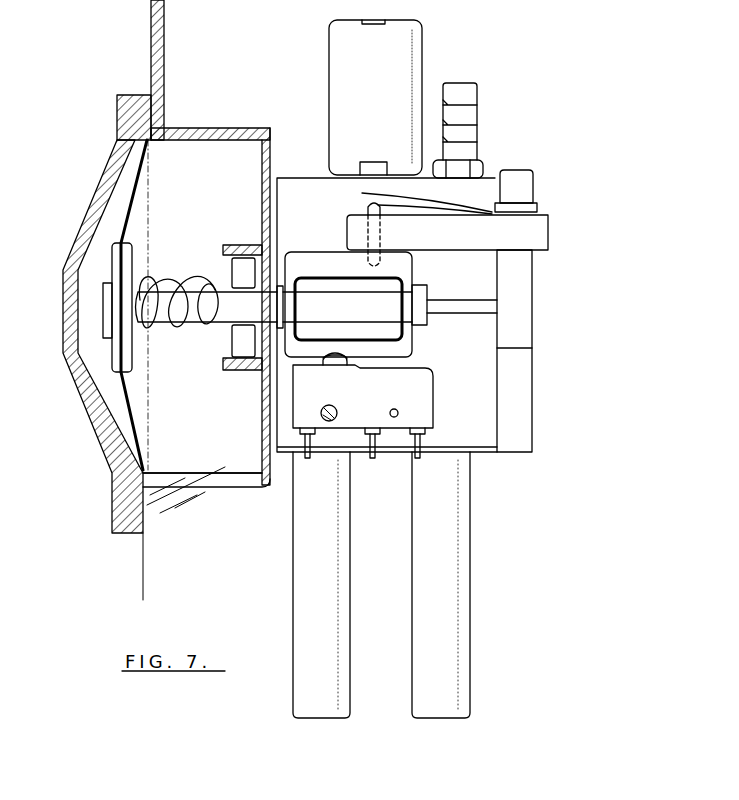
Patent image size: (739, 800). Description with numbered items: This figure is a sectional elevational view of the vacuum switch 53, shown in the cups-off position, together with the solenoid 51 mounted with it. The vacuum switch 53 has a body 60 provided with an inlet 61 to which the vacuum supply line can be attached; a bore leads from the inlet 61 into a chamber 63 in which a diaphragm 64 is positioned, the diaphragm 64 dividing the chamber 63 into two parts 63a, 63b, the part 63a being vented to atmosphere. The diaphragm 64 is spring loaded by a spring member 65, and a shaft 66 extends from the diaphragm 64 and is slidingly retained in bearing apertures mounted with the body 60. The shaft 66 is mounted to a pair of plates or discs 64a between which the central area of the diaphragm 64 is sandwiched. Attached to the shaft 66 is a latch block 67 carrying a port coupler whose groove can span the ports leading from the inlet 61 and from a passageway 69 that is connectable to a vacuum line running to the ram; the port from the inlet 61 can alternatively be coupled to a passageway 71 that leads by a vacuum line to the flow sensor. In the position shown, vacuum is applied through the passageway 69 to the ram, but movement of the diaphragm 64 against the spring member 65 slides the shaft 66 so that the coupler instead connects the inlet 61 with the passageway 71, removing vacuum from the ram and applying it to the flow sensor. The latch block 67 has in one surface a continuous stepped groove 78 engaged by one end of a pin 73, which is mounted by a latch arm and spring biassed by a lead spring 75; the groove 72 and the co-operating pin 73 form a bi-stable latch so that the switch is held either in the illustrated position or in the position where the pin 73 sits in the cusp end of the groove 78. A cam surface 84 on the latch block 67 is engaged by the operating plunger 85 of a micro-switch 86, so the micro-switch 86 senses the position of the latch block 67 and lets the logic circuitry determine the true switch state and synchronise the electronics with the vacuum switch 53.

The solenoid 51 is at (335, 80).
The vacuum switch 53 is at (518, 162).
The body 60 is at (485, 430).
The inlet 61 is at (470, 578).
The chamber 63 is at (192, 128).
The chamber part 63a is at (120, 185).
The chamber part 63b is at (202, 459).
The diaphragm 64 is at (128, 402).
The plates or discs 64a is at (128, 248).
The spring member 65 is at (208, 268).
The shaft 66 is at (223, 310).
The latch block 67 is at (343, 258).
The passageway 69 is at (293, 590).
The passageway 71 is at (460, 82).
The groove 72 is at (532, 232).
The pin 73 is at (368, 206).
The lead spring 75 is at (442, 210).
The stepped groove 78 is at (280, 330).
The cam surface 84 is at (328, 358).
The operating plunger 85 is at (333, 357).
The micro-switch 86 is at (422, 407).